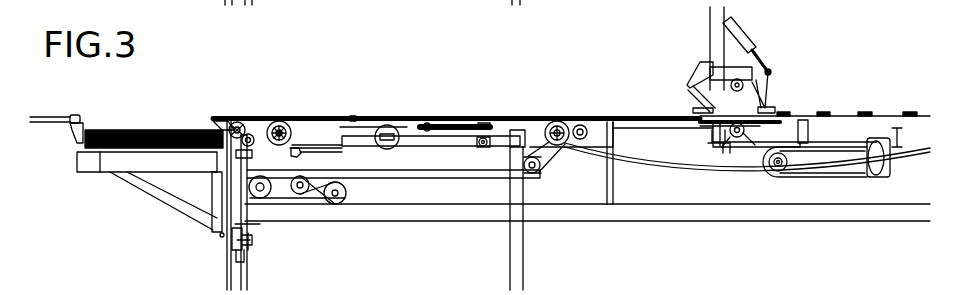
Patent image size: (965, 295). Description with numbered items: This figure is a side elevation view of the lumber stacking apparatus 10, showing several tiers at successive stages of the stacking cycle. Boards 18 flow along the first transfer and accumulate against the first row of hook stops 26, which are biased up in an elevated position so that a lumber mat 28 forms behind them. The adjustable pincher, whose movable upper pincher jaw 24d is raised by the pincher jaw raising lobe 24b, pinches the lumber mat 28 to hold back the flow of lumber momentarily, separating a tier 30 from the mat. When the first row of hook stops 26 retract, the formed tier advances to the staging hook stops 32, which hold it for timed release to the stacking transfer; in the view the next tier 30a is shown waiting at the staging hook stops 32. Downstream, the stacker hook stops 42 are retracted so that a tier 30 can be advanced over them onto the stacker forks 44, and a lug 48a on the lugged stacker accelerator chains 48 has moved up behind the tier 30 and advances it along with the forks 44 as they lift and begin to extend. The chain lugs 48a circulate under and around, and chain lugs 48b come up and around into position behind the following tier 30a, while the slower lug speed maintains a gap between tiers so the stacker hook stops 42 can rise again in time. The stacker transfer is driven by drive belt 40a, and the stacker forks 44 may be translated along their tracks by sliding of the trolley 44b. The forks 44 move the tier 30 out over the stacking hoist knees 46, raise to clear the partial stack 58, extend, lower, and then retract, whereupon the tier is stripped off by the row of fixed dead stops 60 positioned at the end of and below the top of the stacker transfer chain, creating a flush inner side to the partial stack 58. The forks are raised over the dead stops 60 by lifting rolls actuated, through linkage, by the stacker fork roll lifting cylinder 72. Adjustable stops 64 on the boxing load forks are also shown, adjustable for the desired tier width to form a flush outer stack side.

The apparatus 10 is at (462, 70).
The boards 18 is at (862, 112).
The pincher jaw raising lobe 24b is at (827, 175).
The movable upper pincher jaw 24d is at (768, 105).
The first row of hook stops 26 is at (560, 115).
The lumber mat 28 is at (628, 115).
The tier 30 is at (270, 118).
The next tier 30a is at (478, 117).
The staging hook stops 32 is at (408, 117).
The drive belt 40a is at (417, 177).
The stacker hook stops 42 is at (223, 123).
The stacker forks 44 is at (453, 125).
The trolley 44b is at (483, 147).
The stacking hoist knees 46 is at (113, 163).
The lugged stacker accelerator chains 48 is at (345, 200).
The stacker accelerator chain lugs 48a is at (352, 117).
The chain lugs 48b is at (297, 157).
The partial stack 58 is at (133, 130).
The fixed dead stops 60 is at (220, 125).
The adjustable stops 64 is at (85, 125).
The stacker fork roll lifting cylinder 72 is at (255, 250).